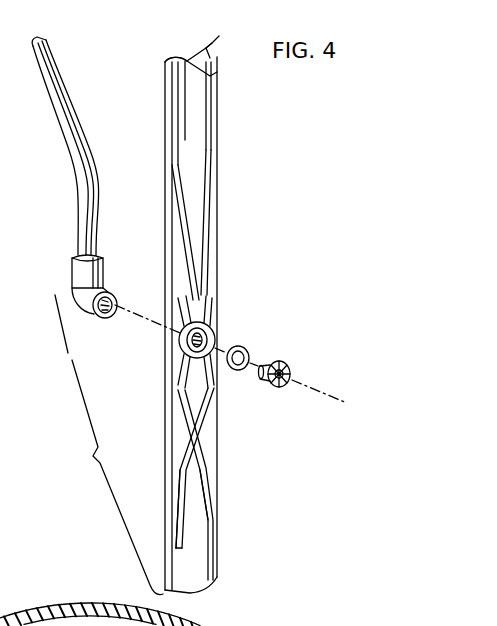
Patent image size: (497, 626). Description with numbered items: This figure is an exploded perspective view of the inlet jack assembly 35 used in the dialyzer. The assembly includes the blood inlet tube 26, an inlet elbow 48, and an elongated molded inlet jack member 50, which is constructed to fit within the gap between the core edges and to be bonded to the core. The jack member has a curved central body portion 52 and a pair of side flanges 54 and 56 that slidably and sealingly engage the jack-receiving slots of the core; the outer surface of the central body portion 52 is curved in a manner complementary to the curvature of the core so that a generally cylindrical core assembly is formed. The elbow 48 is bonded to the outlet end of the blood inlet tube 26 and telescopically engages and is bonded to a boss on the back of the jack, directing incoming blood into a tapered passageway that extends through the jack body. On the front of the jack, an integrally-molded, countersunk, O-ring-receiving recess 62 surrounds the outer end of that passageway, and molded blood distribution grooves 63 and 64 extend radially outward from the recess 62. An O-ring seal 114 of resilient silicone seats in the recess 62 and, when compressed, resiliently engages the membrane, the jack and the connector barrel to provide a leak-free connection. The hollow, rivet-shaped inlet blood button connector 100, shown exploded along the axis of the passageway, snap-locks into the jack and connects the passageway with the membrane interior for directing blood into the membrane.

The blood inlet tube 26 is at (76, 198).
The inlet jack assembly 35 is at (109, 445).
The inlet elbow 48 is at (72, 296).
The elongated molded inlet jack member 50 is at (222, 190).
The curved central body portion 52 is at (210, 77).
The side flange 54 is at (166, 62).
The side flange 56 is at (219, 36).
The O-ring-receiving recess 62 is at (206, 343).
The blood distribution groove 63 is at (205, 470).
The blood distribution groove 64 is at (185, 508).
The inlet blood button connector 100 is at (346, 341).
The O-ring seal 114 is at (241, 370).